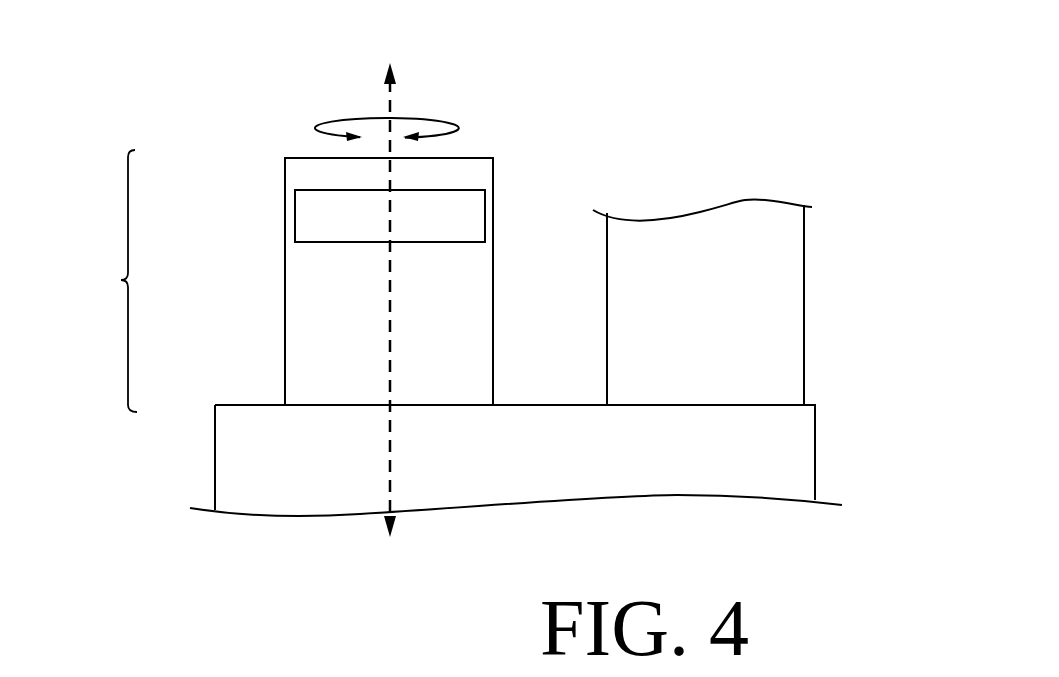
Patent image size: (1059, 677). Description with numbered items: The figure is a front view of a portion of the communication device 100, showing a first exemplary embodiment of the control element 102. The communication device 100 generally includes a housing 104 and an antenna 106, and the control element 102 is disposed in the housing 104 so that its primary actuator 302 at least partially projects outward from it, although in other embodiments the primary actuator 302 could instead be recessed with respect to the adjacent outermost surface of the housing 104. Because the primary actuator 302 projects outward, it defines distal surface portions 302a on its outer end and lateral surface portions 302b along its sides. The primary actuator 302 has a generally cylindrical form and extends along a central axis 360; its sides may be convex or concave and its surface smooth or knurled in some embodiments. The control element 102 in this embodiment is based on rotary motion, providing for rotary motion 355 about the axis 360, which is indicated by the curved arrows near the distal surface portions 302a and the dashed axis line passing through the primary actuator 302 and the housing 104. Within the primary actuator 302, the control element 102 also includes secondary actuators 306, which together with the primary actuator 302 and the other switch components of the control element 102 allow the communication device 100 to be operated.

The communication device 100 is at (163, 507).
The control element 102 is at (252, 158).
The housing 104 is at (513, 462).
The antenna 106 is at (718, 330).
The primary actuator 302 is at (113, 294).
The distal surface portions 302a is at (446, 150).
The lateral surface portions 302b is at (467, 346).
The secondary actuators 306 is at (358, 228).
The rotary motion 355 is at (362, 120).
The axis 360 is at (380, 258).